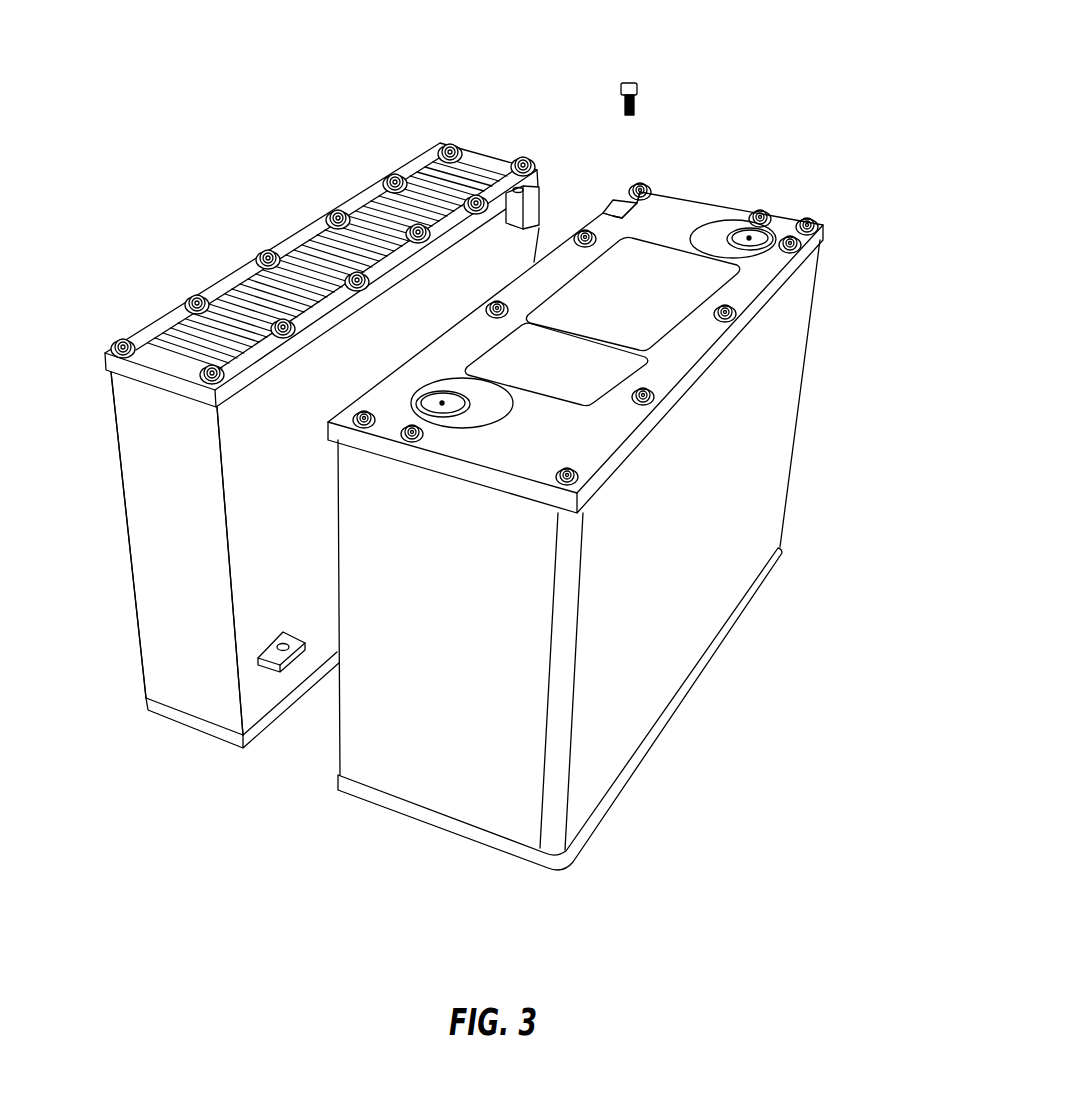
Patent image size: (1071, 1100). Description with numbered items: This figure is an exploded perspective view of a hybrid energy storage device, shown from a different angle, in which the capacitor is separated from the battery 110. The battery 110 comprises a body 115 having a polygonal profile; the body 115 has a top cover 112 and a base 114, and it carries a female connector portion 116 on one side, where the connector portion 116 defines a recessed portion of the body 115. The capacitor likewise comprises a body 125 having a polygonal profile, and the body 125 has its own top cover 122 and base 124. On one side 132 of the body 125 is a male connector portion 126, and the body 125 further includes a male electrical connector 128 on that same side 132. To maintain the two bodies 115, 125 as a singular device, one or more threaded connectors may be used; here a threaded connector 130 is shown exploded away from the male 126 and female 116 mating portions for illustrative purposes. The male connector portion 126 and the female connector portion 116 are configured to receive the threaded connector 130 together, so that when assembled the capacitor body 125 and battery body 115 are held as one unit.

The battery 110 is at (818, 302).
The top cover 112 is at (695, 216).
The base 114 is at (457, 828).
The body 115 is at (775, 480).
The female connector portion 116 is at (612, 213).
The top cover 122 is at (307, 257).
The base 124 is at (172, 715).
The body 125 is at (157, 540).
The male connector portion 126 is at (540, 172).
The male electrical connector 128 is at (288, 667).
The threaded connector 130 is at (620, 88).
The side 132 is at (290, 513).